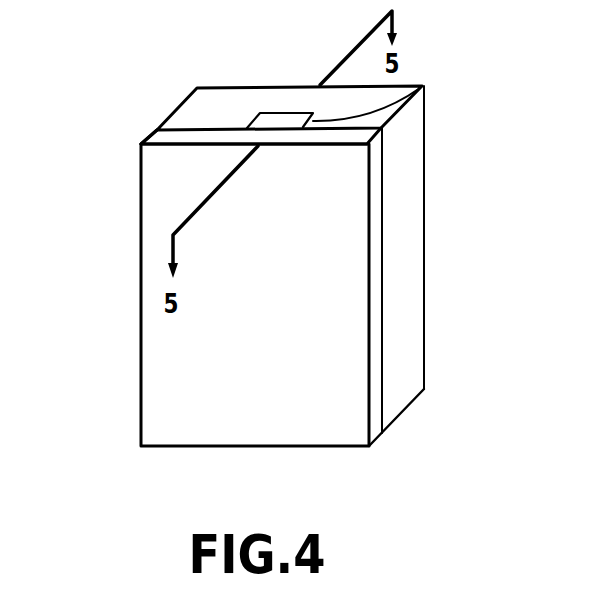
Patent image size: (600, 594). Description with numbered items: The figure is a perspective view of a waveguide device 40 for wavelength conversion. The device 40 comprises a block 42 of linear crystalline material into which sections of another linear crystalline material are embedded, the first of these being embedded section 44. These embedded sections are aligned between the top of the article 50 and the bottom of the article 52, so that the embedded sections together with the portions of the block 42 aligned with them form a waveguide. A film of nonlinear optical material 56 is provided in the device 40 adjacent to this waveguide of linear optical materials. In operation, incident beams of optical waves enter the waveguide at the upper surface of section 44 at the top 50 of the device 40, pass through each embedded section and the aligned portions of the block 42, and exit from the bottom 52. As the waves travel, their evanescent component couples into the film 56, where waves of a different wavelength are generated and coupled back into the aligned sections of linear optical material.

The waveguide device 40 is at (182, 102).
The block 42 is at (165, 117).
The embedded section 44 is at (418, 87).
The top of the article 50 is at (268, 103).
The bottom of the article 52 is at (408, 408).
The film of nonlinear optical material 56 is at (140, 280).